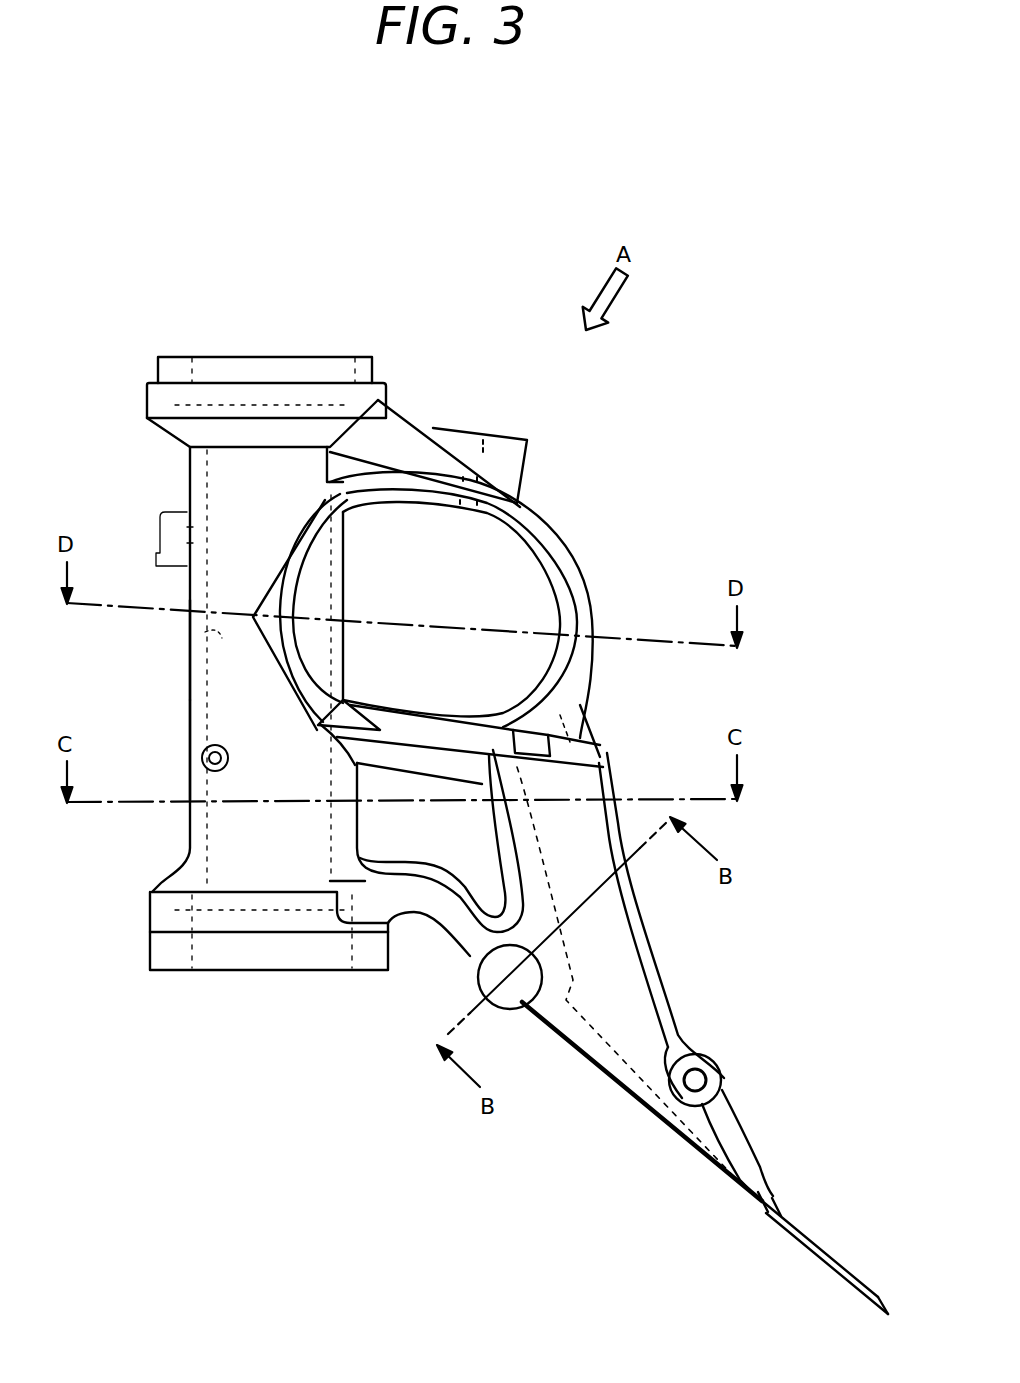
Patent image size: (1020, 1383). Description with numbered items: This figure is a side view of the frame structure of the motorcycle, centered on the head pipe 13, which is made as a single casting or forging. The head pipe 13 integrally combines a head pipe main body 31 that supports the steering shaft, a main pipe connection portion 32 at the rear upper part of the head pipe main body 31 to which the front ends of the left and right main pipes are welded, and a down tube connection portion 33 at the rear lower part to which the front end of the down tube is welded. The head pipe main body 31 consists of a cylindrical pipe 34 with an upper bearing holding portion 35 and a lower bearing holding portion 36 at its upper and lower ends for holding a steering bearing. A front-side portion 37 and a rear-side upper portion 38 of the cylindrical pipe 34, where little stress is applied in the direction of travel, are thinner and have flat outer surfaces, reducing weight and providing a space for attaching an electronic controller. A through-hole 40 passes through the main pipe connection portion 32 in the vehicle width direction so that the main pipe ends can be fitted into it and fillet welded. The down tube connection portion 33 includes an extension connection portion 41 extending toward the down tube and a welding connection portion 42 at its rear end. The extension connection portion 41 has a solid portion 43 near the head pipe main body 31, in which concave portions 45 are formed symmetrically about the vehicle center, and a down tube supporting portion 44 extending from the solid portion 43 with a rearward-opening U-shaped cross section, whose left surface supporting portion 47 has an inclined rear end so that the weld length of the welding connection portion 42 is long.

The head pipe 13 is at (280, 1012).
The head pipe main body 31 is at (172, 646).
The main pipe connection portion 32 is at (566, 520).
The down tube connection portion 33 is at (738, 1006).
The cylindrical pipe 34 is at (237, 487).
The upper bearing holding portion 35 is at (148, 385).
The lower bearing holding portion 36 is at (152, 925).
The front-side portion 37 is at (188, 706).
The rear-side upper portion 38 is at (343, 562).
The through-hole 40 is at (522, 580).
The extension connection portion 41 is at (628, 1128).
The welding connection portion 42 is at (738, 1140).
The solid portion 43 is at (413, 915).
The down tube supporting portion 44 is at (710, 1150).
The concave portions 45 is at (452, 840).
The left surface supporting portion 47 is at (618, 968).